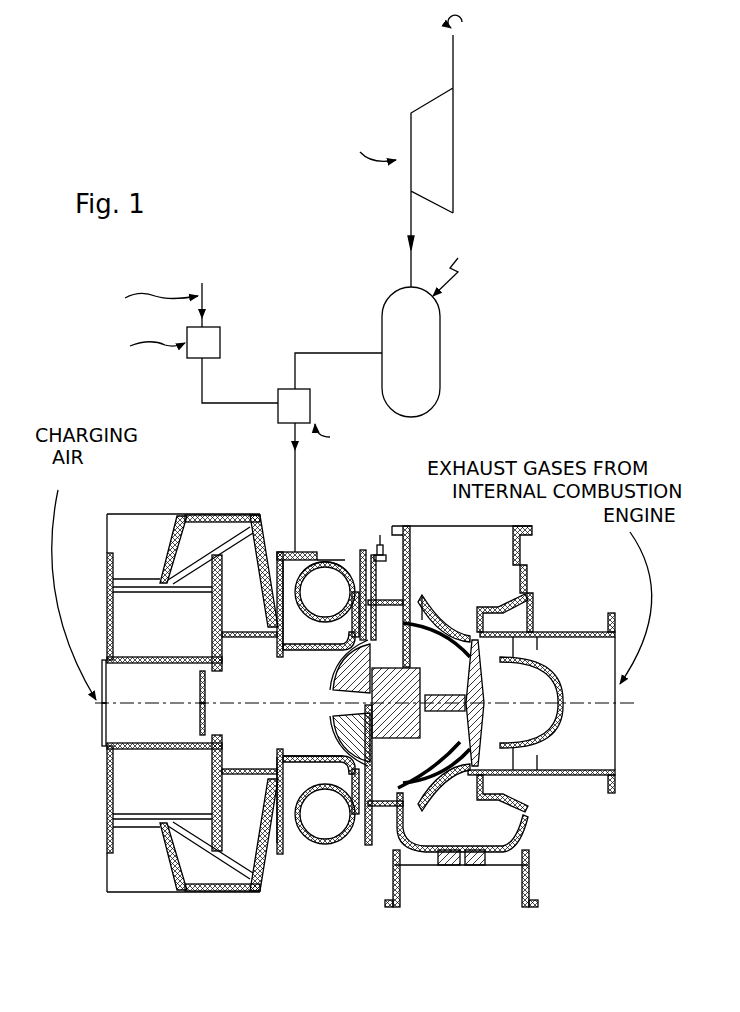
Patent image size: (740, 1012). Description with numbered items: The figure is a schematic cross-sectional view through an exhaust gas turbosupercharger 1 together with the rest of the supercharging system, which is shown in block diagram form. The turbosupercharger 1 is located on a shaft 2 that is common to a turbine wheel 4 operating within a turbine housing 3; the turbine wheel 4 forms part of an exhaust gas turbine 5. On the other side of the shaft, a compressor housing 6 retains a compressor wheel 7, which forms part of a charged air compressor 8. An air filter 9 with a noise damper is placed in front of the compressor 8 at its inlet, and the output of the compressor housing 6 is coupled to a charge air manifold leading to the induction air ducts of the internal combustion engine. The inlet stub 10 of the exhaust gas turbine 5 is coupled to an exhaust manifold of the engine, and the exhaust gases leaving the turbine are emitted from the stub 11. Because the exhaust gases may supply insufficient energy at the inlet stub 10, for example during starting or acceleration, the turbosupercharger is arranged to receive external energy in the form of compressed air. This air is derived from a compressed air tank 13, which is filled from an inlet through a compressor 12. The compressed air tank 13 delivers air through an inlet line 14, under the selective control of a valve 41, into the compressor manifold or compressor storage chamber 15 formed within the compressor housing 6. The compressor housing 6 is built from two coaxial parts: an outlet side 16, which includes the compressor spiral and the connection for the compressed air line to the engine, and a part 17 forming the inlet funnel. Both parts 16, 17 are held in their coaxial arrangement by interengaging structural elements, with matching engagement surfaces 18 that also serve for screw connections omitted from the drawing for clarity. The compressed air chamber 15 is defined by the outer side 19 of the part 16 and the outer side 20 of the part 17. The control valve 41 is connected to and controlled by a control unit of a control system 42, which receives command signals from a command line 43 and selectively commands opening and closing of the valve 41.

The turbosupercharger 1 is at (300, 884).
The shaft 2 is at (434, 712).
The turbine housing 3 is at (485, 818).
The turbine wheel 4 is at (485, 722).
The exhaust gas turbine 5 is at (480, 872).
The compressor housing 6 is at (340, 825).
The compressor wheel 7 is at (330, 635).
The charged air compressor 8 is at (325, 858).
The air filter 9 is at (196, 893).
The inlet stub 10 is at (570, 632).
The stub 11 is at (522, 552).
The compressor 12 is at (435, 163).
The compressed air tank 13 is at (427, 377).
The inlet line 14 is at (300, 483).
The compressor storage chamber 15 is at (215, 633).
The outlet side 16 is at (340, 565).
The part 17 is at (265, 607).
The engagement surfaces 18 is at (287, 563).
The outer side 19 is at (262, 587).
The outer side 20 is at (290, 862).
The control valve 41 is at (310, 404).
The control system 42 is at (220, 343).
The command line 43 is at (202, 297).